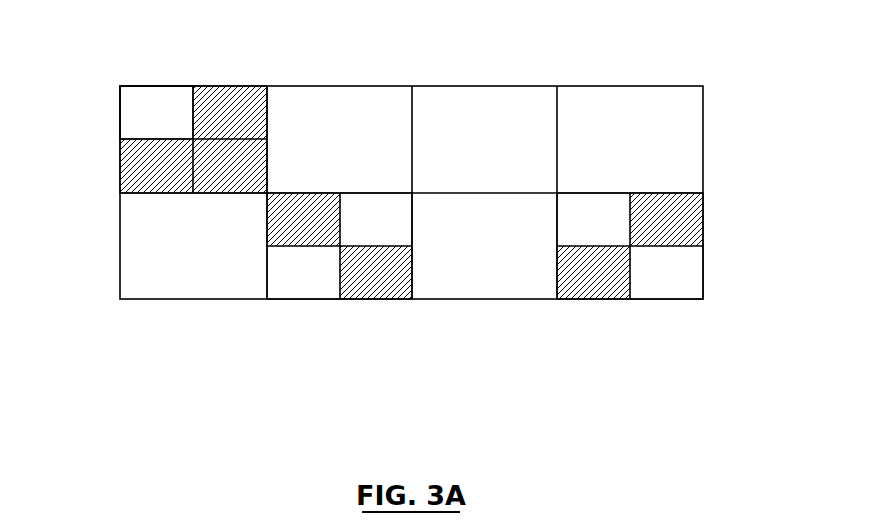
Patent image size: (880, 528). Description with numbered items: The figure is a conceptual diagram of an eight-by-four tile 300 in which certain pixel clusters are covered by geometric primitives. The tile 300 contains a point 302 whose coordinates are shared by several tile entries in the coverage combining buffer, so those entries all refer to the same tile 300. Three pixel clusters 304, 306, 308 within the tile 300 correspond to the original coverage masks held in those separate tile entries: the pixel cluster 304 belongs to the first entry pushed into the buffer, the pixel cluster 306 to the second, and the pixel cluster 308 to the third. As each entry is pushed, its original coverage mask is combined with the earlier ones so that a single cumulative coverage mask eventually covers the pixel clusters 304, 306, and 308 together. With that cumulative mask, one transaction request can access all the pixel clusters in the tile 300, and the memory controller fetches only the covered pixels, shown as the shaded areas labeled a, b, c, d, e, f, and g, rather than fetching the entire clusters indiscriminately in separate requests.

The tile 300 is at (703, 87).
The point 302 is at (153, 113).
The pixel cluster 304 is at (118, 87).
The pixel cluster 306 is at (412, 299).
The pixel cluster 308 is at (557, 299).